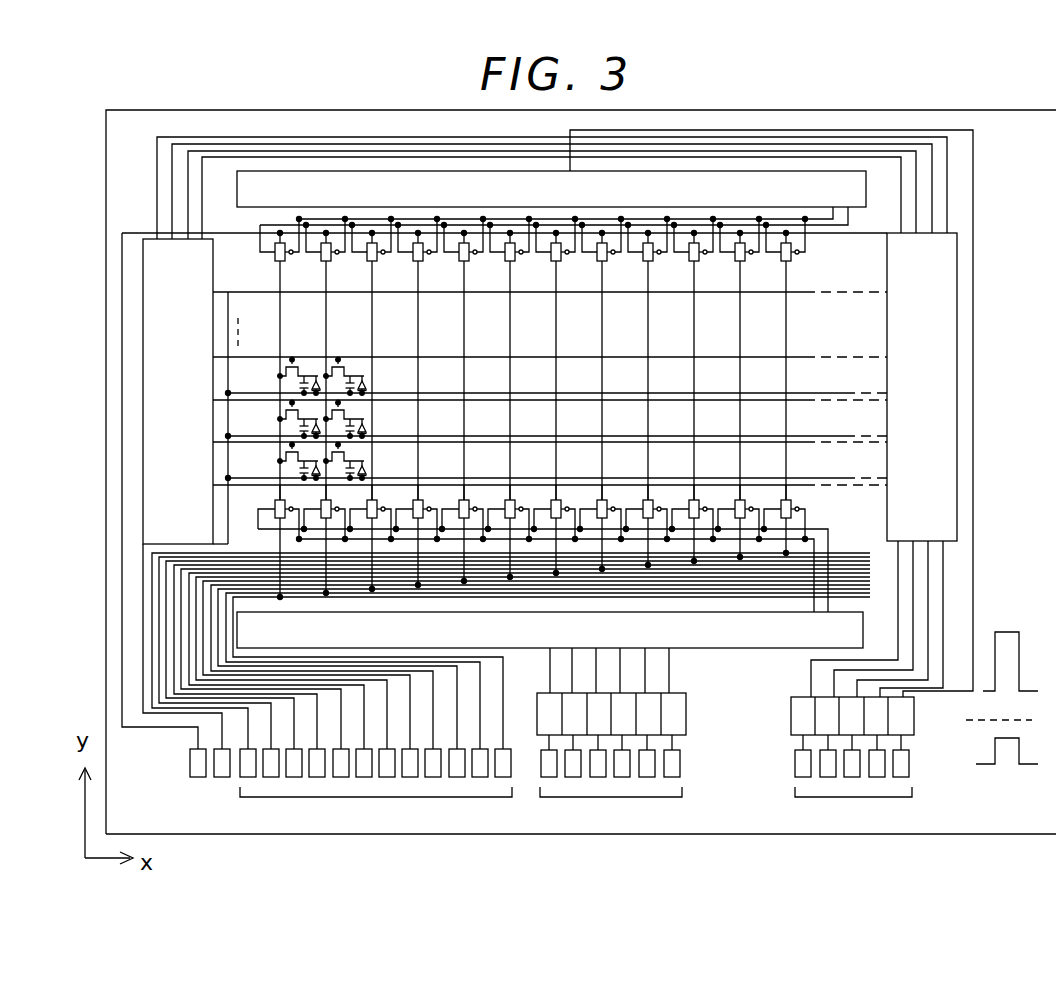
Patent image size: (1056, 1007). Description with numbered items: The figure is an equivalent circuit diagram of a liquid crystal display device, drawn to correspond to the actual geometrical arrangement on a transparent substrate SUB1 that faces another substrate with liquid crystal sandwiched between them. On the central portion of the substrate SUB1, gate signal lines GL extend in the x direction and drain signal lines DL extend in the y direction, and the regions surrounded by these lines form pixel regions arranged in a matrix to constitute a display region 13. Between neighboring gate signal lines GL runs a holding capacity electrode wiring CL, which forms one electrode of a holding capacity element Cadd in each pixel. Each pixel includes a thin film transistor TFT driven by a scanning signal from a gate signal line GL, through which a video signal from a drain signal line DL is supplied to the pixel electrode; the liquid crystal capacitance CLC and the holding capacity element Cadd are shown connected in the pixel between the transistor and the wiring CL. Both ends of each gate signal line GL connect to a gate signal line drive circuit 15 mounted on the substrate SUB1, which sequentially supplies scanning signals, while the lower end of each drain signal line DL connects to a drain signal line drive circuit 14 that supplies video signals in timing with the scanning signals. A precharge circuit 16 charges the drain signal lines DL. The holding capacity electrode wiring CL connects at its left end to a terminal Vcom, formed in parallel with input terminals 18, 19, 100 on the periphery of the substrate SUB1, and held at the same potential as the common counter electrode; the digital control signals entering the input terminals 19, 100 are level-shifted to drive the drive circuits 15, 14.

The display region 13 is at (613, 310).
The drain signal line drive circuit 14 is at (550, 630).
The gate signal line drive circuit 15 is at (550, 388).
The precharge circuit 16 is at (551, 189).
The input terminal 18 is at (511, 674).
The input terminal 19 is at (611, 739).
The input terminal 100 is at (867, 686).
The drain signal line DL is at (280, 283).
The gate signal line GL is at (261, 356).
The holding capacity electrode wiring CL is at (800, 437).
The thin film transistor TFT is at (303, 356).
The liquid crystal capacitance CLC is at (352, 376).
The holding capacity element Cadd is at (371, 388).
The terminal Vcom is at (219, 778).
The transparent substrate SUB1 is at (855, 836).